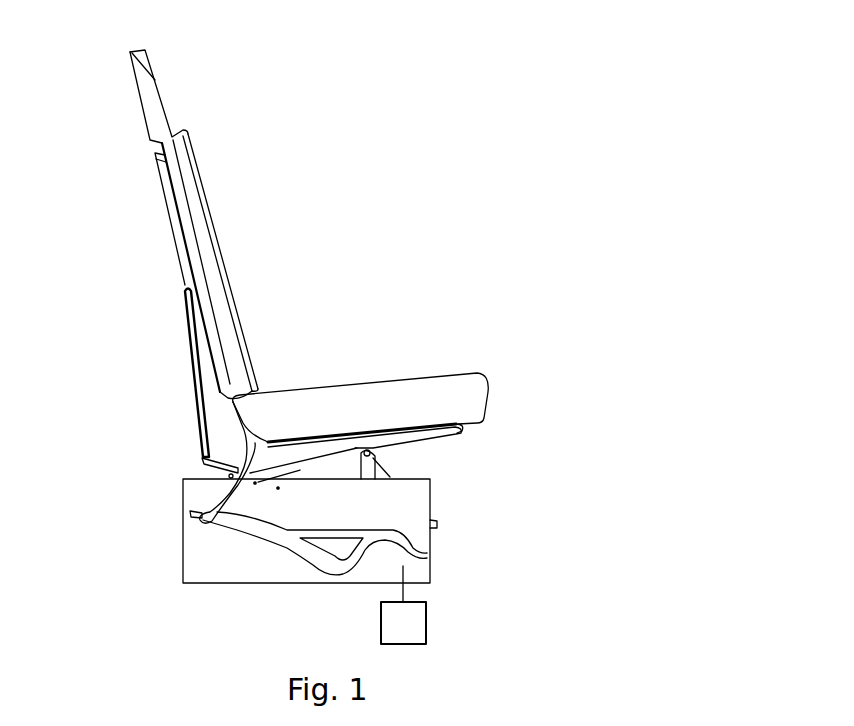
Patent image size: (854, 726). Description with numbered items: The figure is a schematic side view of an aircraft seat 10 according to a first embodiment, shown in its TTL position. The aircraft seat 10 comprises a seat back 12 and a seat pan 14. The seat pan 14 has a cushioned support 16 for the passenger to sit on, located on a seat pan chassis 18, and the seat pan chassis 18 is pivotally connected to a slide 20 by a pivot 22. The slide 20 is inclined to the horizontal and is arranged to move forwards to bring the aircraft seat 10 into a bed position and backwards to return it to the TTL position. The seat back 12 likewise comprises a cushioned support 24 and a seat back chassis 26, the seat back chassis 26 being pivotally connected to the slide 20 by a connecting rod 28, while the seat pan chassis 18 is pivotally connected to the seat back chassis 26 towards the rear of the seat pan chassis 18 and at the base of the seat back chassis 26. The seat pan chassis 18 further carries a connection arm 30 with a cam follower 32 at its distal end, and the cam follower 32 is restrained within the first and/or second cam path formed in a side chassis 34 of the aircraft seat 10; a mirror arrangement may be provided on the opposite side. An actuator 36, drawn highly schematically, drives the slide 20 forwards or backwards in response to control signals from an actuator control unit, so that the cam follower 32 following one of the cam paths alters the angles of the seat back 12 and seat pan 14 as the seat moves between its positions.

The aircraft seat 10 is at (435, 75).
The seat back 12 is at (285, 253).
The seat pan 14 is at (413, 332).
The cushioned support 16 is at (463, 390).
The seat pan chassis 18 is at (450, 428).
The slide 20 is at (207, 469).
The pivot 22 is at (377, 455).
The cushioned support 24 is at (200, 160).
The seat back chassis 26 is at (167, 182).
The connecting rod 28 is at (195, 393).
The connection arm 30 is at (262, 472).
The cam follower 32 is at (235, 478).
The side chassis 34 is at (225, 573).
The actuator 36 is at (408, 636).